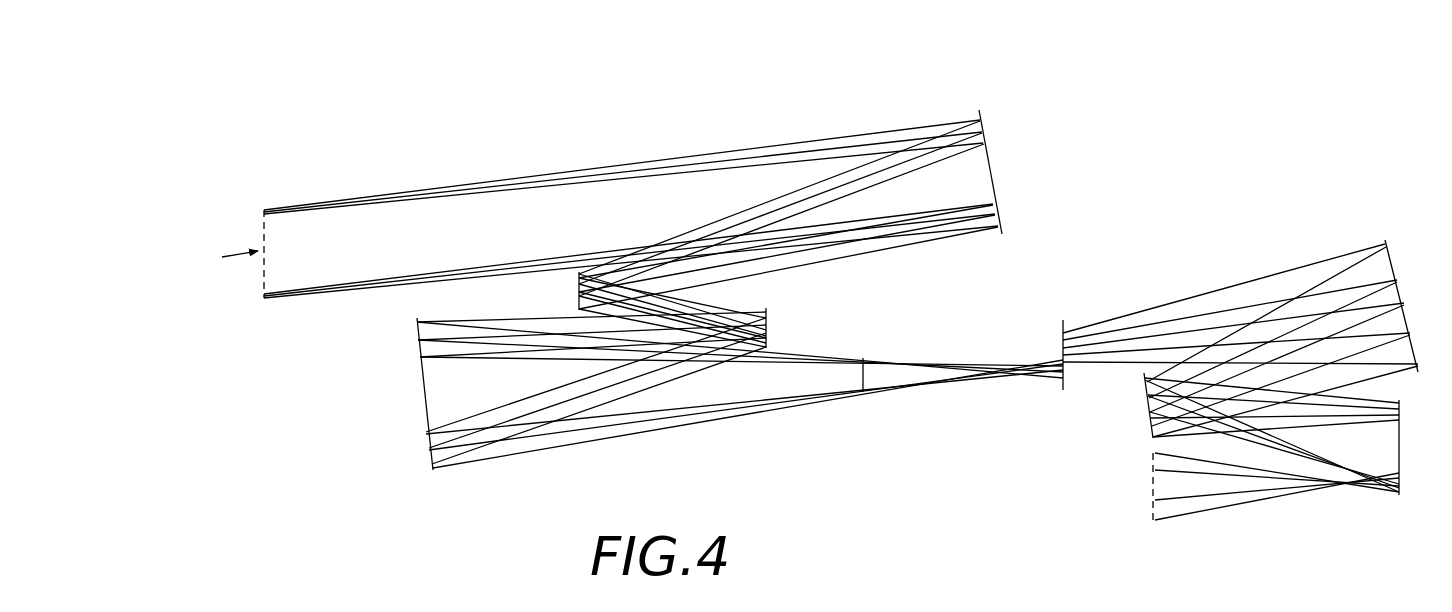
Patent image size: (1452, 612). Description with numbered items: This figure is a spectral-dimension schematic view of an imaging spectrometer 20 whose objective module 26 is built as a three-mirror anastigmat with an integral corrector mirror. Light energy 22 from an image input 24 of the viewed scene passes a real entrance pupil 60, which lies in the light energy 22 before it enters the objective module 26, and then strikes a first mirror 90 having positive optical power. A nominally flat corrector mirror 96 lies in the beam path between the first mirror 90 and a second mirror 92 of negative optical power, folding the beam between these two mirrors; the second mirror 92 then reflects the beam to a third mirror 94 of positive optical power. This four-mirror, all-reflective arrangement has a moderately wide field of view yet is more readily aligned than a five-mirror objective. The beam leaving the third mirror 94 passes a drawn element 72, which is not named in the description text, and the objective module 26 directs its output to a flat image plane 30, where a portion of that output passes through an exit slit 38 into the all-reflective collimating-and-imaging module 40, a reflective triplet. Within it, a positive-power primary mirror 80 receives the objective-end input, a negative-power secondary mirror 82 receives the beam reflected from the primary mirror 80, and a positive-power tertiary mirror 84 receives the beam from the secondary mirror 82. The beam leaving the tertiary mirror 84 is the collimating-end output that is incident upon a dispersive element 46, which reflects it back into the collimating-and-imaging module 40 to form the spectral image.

The imaging spectrometer 20 is at (476, 134).
The light energy 22 is at (234, 262).
The image input 24 is at (177, 226).
The objective module 26 is at (869, 292).
The image plane 30 is at (1031, 337).
The exit slit 38 is at (1060, 357).
The collimating-and-imaging module 40 is at (1405, 392).
The dispersive element 46 is at (1152, 483).
The real entrance pupil 60 is at (262, 237).
The aperture stop 72 is at (862, 372).
The primary mirror 80 is at (1398, 255).
The secondary mirror 82 is at (1143, 410).
The tertiary mirror 84 is at (1400, 472).
The first mirror 90 is at (990, 152).
The second mirror 92 is at (768, 323).
The third mirror 94 is at (416, 380).
The corrector mirror 96 is at (577, 291).